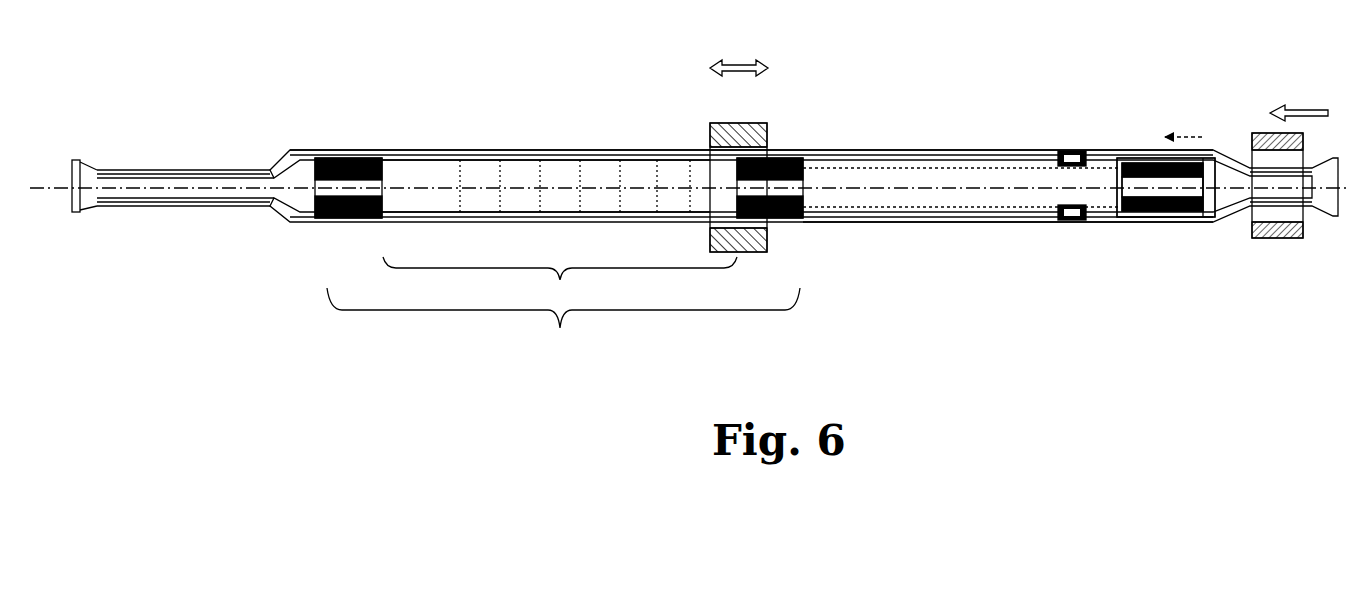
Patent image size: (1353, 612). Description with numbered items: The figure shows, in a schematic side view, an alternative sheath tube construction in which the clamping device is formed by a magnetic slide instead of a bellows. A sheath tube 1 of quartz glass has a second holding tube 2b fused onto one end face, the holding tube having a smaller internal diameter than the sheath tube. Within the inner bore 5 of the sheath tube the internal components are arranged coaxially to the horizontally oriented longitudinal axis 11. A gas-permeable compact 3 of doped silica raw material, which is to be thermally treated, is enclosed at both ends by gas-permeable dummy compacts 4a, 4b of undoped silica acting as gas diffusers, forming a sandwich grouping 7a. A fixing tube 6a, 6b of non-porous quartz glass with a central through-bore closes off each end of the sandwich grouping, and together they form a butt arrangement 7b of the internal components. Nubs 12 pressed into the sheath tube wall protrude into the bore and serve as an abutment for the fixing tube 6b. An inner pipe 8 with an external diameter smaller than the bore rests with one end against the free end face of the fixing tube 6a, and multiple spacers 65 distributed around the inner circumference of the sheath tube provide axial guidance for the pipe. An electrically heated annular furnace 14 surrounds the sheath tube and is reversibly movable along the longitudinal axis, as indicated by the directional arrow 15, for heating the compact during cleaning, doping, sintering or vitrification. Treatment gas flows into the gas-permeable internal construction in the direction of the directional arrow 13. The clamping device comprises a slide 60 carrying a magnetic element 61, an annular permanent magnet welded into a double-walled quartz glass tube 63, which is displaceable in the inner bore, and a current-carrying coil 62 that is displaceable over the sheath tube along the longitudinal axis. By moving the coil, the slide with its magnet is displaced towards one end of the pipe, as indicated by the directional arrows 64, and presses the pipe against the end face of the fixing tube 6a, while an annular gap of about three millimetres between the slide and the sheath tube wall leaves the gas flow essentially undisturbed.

The sheath tube 1 is at (751, 112).
The second holding tube 2b is at (178, 170).
The compact 3 is at (497, 172).
The dummy compact 4a is at (663, 165).
The dummy compact 4b is at (399, 165).
The inner bore 5 is at (1008, 251).
The fixing tube 6a is at (790, 158).
The fixing tube 6b is at (330, 160).
The sandwich grouping 7a is at (560, 285).
The butt arrangement 7b is at (563, 329).
The inner pipe 8 is at (907, 175).
The longitudinal axis 11 is at (47, 190).
The nubs 12 is at (306, 152).
The directional arrow 13 is at (1300, 100).
The annular furnace 14 is at (712, 138).
The directional arrow 15 is at (740, 72).
The slide 60 is at (1146, 232).
The magnetic element 61 is at (1140, 165).
The coil 62 is at (1282, 238).
The double-walled quartz glass tube 63 is at (1213, 210).
The directional arrows 64 is at (1181, 134).
The spacers 65 is at (1062, 151).